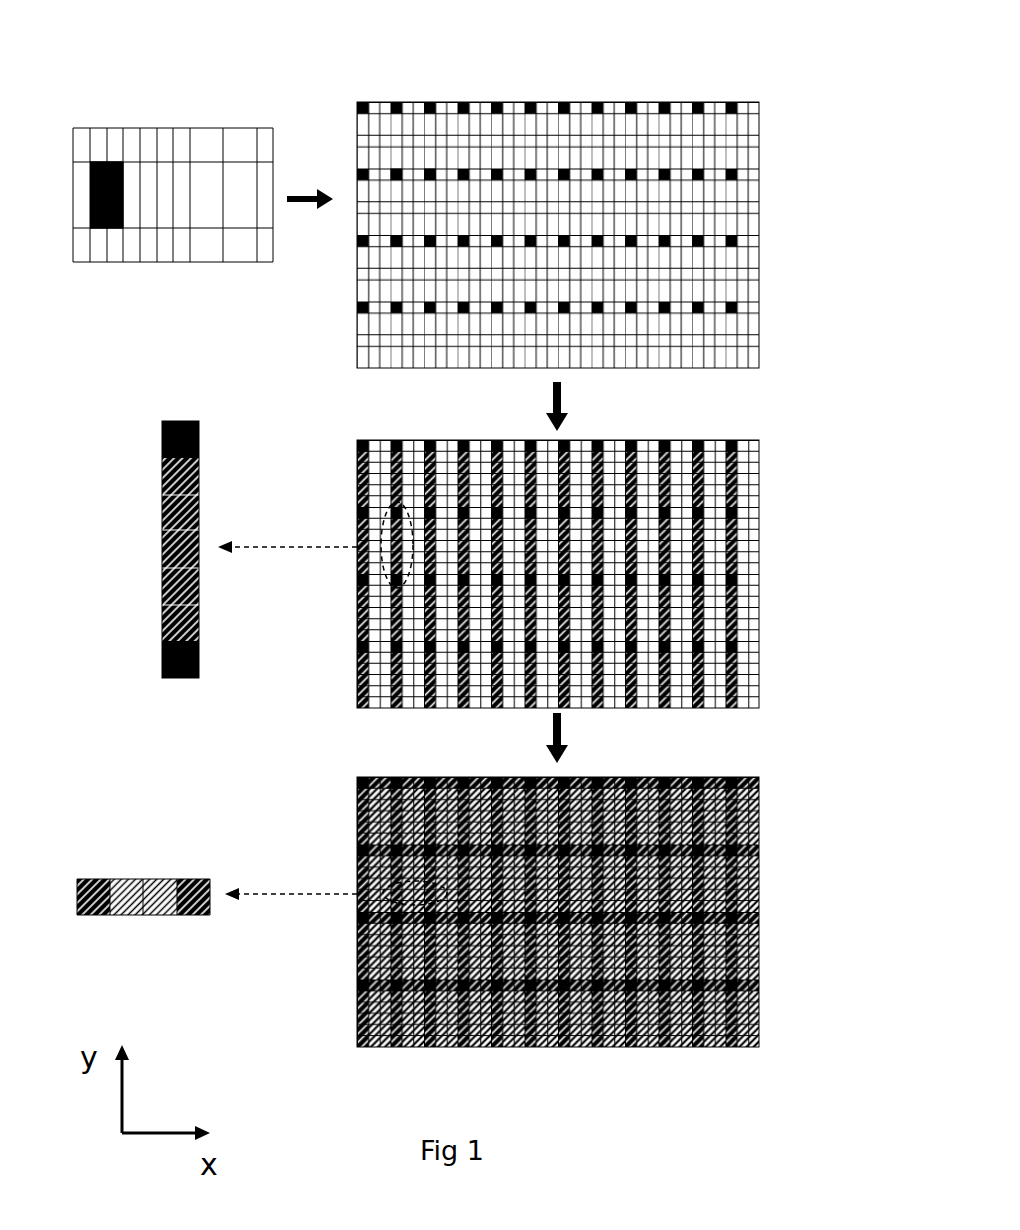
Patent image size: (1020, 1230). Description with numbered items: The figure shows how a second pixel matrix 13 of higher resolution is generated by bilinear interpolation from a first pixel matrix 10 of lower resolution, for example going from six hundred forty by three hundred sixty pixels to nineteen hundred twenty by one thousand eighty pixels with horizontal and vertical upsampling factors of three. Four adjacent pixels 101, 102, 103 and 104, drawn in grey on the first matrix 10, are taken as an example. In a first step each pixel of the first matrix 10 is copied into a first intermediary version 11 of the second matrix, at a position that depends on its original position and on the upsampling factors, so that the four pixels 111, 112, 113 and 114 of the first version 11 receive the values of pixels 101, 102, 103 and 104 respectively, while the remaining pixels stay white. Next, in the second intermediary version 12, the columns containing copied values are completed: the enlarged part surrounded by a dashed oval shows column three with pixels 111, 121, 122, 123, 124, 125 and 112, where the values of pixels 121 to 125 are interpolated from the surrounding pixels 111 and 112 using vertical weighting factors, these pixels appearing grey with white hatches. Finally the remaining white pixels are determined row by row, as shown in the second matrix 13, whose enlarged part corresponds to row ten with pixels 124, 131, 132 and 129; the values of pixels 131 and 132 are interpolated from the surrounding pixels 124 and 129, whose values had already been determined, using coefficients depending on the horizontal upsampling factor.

The first pixel matrix 10 is at (117, 115).
The pixel of the first matrix 101 is at (98, 165).
The pixel of the first matrix 102 is at (98, 222).
The pixel of the first matrix 103 is at (118, 185).
The pixel of the first matrix 104 is at (117, 217).
The first intermediary version of the second matrix 11 is at (768, 197).
The pixel of the first version of the second matrix 111 is at (397, 168).
The pixel of the first version of the second matrix 112 is at (397, 247).
The pixel of the first version of the second matrix 113 is at (428, 168).
The pixel of the first version of the second matrix 114 is at (428, 247).
The second intermediary version of the second matrix 12 is at (768, 586).
The interpolated pixel 121 is at (183, 480).
The interpolated pixel 122 is at (182, 517).
The interpolated pixel 123 is at (180, 552).
The interpolated pixel 124 is at (176, 588).
The interpolated pixel 125 is at (170, 625).
The second pixel matrix 13 is at (768, 901).
The row-interpolated pixel 131 is at (125, 895).
The row-interpolated pixel 132 is at (160, 895).
The previously interpolated pixel 129 is at (195, 897).